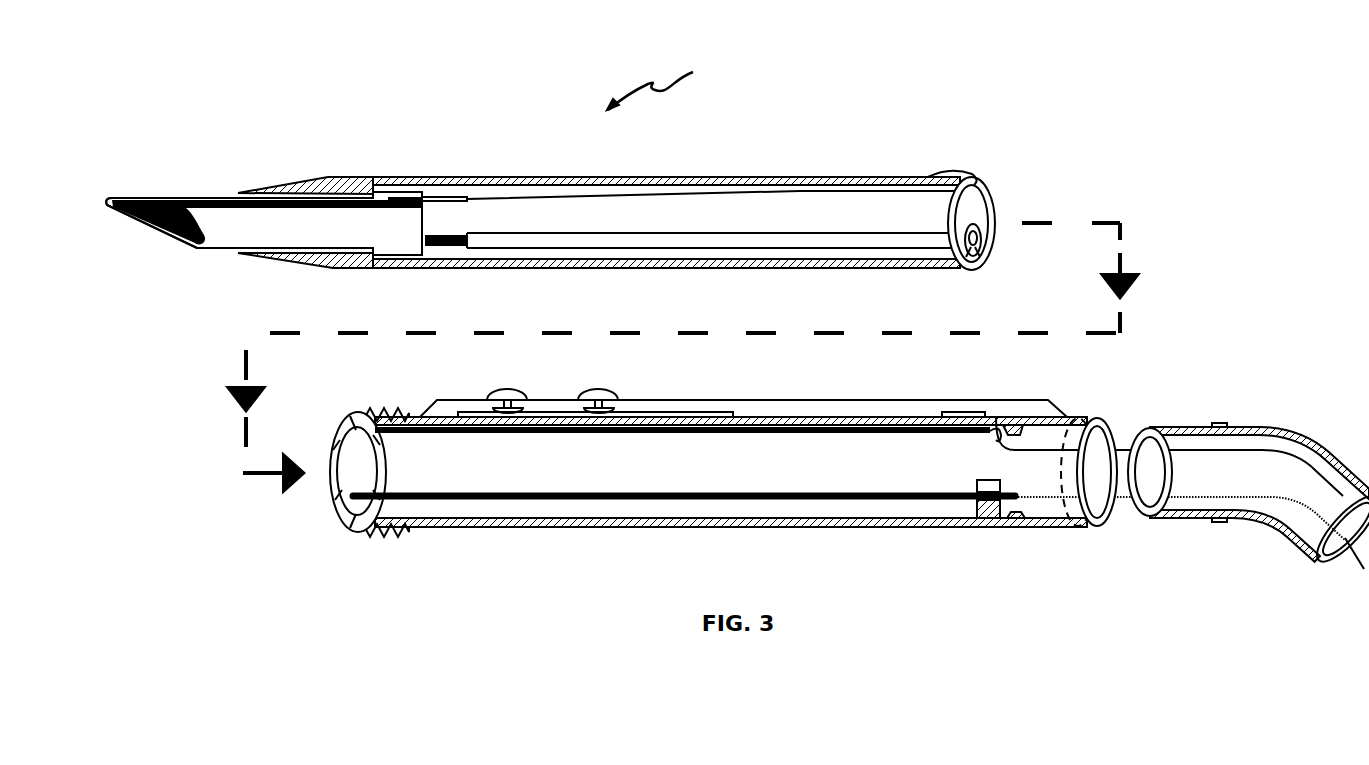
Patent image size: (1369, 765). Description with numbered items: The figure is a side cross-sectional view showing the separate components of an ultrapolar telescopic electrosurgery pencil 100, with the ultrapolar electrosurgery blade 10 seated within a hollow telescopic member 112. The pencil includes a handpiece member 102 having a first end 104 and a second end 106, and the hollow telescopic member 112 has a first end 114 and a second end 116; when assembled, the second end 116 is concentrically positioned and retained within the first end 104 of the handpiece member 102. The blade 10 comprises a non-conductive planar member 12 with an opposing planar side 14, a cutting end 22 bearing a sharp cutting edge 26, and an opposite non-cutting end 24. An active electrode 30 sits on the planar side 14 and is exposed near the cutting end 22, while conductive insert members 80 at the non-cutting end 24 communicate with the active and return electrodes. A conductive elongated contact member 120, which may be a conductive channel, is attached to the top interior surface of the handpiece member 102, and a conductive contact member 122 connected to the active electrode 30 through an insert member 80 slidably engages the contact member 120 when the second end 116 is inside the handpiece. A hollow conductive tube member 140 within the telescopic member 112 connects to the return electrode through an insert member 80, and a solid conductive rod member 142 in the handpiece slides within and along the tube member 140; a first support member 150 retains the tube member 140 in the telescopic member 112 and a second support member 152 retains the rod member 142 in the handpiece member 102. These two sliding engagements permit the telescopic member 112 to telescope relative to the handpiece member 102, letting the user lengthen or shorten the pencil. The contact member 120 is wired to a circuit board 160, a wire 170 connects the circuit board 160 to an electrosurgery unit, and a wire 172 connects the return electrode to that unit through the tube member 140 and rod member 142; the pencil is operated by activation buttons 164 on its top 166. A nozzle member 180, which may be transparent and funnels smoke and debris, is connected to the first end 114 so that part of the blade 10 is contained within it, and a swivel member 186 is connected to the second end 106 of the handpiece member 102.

The ultrapolar telescopic electrosurgery pencil 100 is at (670, 83).
The ultrapolar electrosurgery blade 10 is at (134, 190).
The non-conductive planar member 12 is at (224, 232).
The opposing planar side 14 is at (277, 239).
The cutting end 22 is at (105, 216).
The non-cutting end 24 is at (428, 220).
The sharp cutting edge 26 is at (159, 238).
The active electrode 30 is at (168, 210).
The conductive insert members 80 is at (432, 197).
The handpiece member 102 is at (547, 528).
The first end of handpiece member 104 is at (330, 480).
The second end of handpiece member 106 is at (1108, 518).
The hollow telescopic member 112 is at (793, 177).
The first end of hollow telescopic member 114 is at (328, 264).
The second end of hollow telescopic member 116 is at (992, 206).
The conductive elongated contact member 120 is at (863, 418).
The conductive contact member 122 is at (962, 173).
The hollow conductive tube member 140 is at (555, 249).
The solid conductive rod member 142 is at (442, 500).
The first support member 150 is at (986, 250).
The second support member 152 is at (990, 527).
The circuit board 160 is at (695, 412).
The activation buttons 164 is at (508, 388).
The top of electrosurgery pencil 166 is at (777, 398).
The wire 170 is at (1293, 532).
The wire 172 is at (1350, 545).
The nozzle member 180 is at (306, 183).
The swivel member 186 is at (1183, 428).